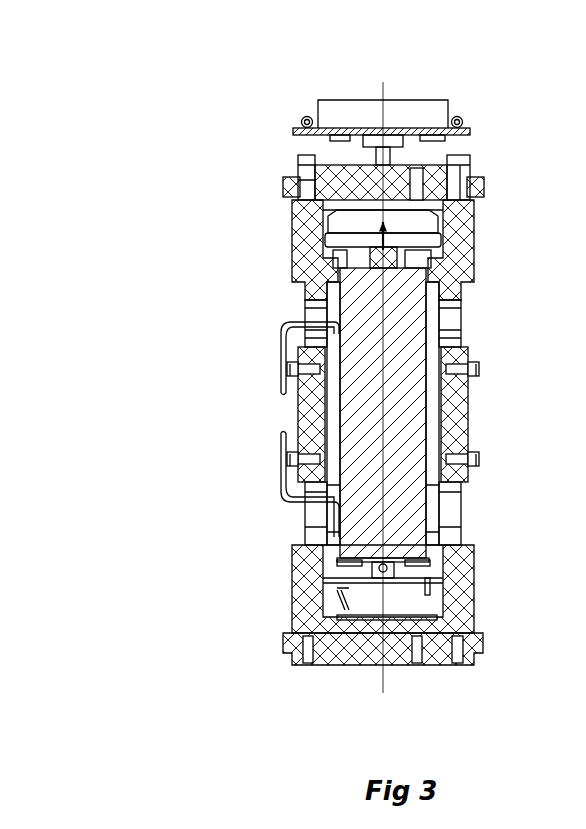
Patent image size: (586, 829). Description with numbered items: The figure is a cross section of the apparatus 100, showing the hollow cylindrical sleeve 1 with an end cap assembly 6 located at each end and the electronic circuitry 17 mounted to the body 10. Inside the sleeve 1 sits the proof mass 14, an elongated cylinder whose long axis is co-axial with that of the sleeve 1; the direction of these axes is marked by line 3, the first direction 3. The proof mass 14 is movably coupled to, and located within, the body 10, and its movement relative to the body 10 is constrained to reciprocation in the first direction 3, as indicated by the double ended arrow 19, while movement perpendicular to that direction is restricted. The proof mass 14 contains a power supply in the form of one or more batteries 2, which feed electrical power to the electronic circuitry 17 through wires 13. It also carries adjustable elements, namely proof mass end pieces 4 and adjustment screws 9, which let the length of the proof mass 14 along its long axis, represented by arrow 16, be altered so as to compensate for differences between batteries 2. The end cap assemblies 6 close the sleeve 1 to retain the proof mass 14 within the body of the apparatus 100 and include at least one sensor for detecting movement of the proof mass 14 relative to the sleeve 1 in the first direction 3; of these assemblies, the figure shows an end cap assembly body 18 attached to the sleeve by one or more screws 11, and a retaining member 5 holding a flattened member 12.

The apparatus 100 is at (214, 130).
The body 10 is at (158, 152).
The sleeve 1 is at (370, 480).
The power supply 2 is at (337, 498).
The first direction 3 is at (385, 683).
The proof mass end pieces 4 is at (390, 565).
The retaining member 5 is at (445, 223).
The end cap assemblies 6 is at (474, 186).
The adjustment screws 9 is at (417, 563).
The screws 11 is at (463, 148).
The flattened member 12 is at (352, 238).
The wires 13 is at (283, 323).
The proof mass 14 is at (433, 515).
The overall length of the proof mass 16 is at (323, 578).
The electronic circuitry 17 is at (397, 120).
The end cap assembly body 18 is at (332, 163).
The double ended arrow 19 is at (383, 598).